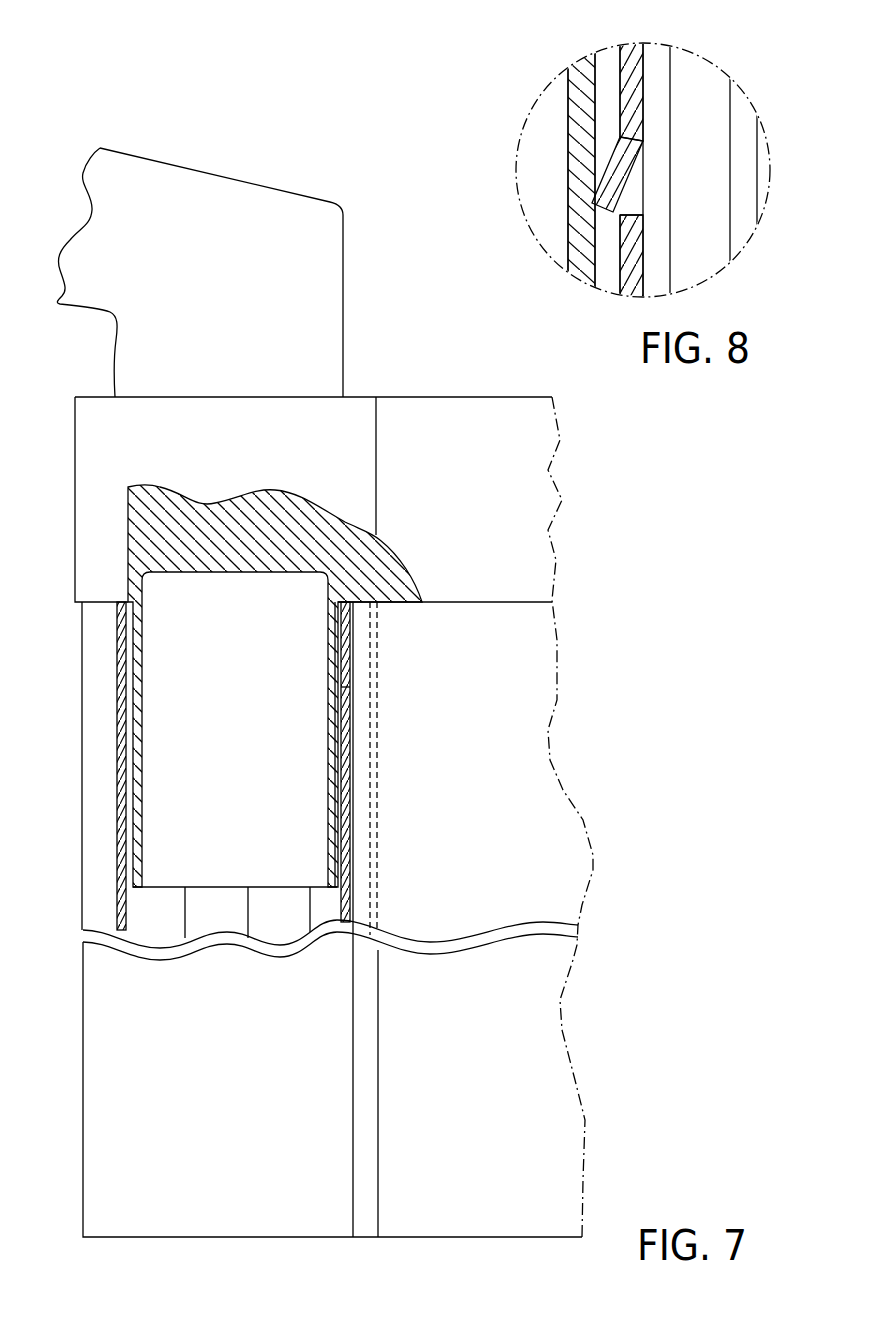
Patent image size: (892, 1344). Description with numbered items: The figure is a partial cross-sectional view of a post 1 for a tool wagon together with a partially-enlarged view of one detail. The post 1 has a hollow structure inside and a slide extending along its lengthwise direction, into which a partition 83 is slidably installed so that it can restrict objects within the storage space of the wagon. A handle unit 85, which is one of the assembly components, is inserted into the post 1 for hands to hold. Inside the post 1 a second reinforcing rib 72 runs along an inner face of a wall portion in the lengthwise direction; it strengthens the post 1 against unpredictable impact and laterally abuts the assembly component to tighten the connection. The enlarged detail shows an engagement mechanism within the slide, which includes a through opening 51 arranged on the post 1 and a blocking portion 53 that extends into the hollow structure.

In FIG. 7, the post 1 is at (82, 875).
In FIG. 7, the handle unit 85 is at (365, 238).
In FIG. 7, the partition 83 is at (473, 722).
In FIG. 7, the second reinforcing rib 72 is at (343, 903).
In FIG. 8, the blocking portion 53 is at (628, 172).
In FIG. 8, the through opening 51 is at (642, 205).